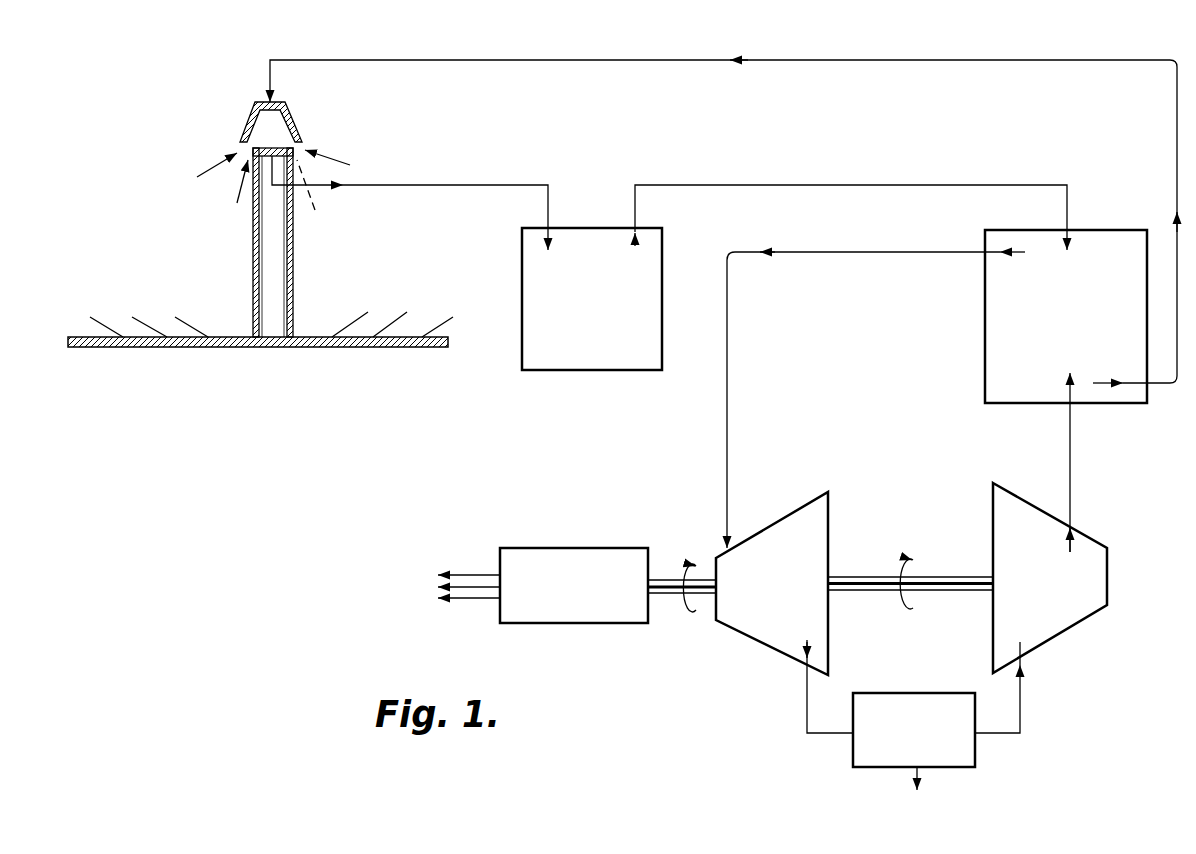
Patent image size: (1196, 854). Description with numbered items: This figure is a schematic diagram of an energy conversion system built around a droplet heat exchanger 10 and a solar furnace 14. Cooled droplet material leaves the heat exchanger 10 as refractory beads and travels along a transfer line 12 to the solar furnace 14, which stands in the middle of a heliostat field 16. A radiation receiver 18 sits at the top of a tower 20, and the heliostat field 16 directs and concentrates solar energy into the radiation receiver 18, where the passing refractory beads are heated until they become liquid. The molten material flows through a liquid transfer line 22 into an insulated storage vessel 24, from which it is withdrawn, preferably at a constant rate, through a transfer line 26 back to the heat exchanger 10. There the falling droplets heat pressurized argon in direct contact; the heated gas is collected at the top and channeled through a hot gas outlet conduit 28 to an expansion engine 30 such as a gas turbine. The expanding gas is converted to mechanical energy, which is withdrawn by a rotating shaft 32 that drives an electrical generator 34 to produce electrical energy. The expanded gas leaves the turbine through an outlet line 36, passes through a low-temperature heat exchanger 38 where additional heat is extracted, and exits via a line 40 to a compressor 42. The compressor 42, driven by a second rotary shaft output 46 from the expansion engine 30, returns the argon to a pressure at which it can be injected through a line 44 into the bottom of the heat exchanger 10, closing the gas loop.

The heat exchanger 10 is at (962, 341).
The transfer line 12 is at (893, 58).
The solar furnace 14 is at (260, 203).
The heliostat field 16 is at (185, 318).
The radiation receiver 18 is at (249, 104).
The tower 20 is at (296, 246).
The liquid transfer line 22 is at (406, 184).
The storage vessel 24 is at (572, 372).
The transfer line 26 is at (903, 185).
The hot gas outlet conduit 28 is at (728, 357).
The expansion engine 30 is at (790, 508).
The rotating shaft 32 is at (658, 600).
The electrical generator 34 is at (527, 625).
The outlet line 36 is at (805, 696).
The low-temperature heat exchanger 38 is at (977, 755).
The line 40 is at (1022, 698).
The compressor 42 is at (1090, 613).
The line 44 is at (1072, 460).
The second rotary shaft output 46 is at (847, 573).